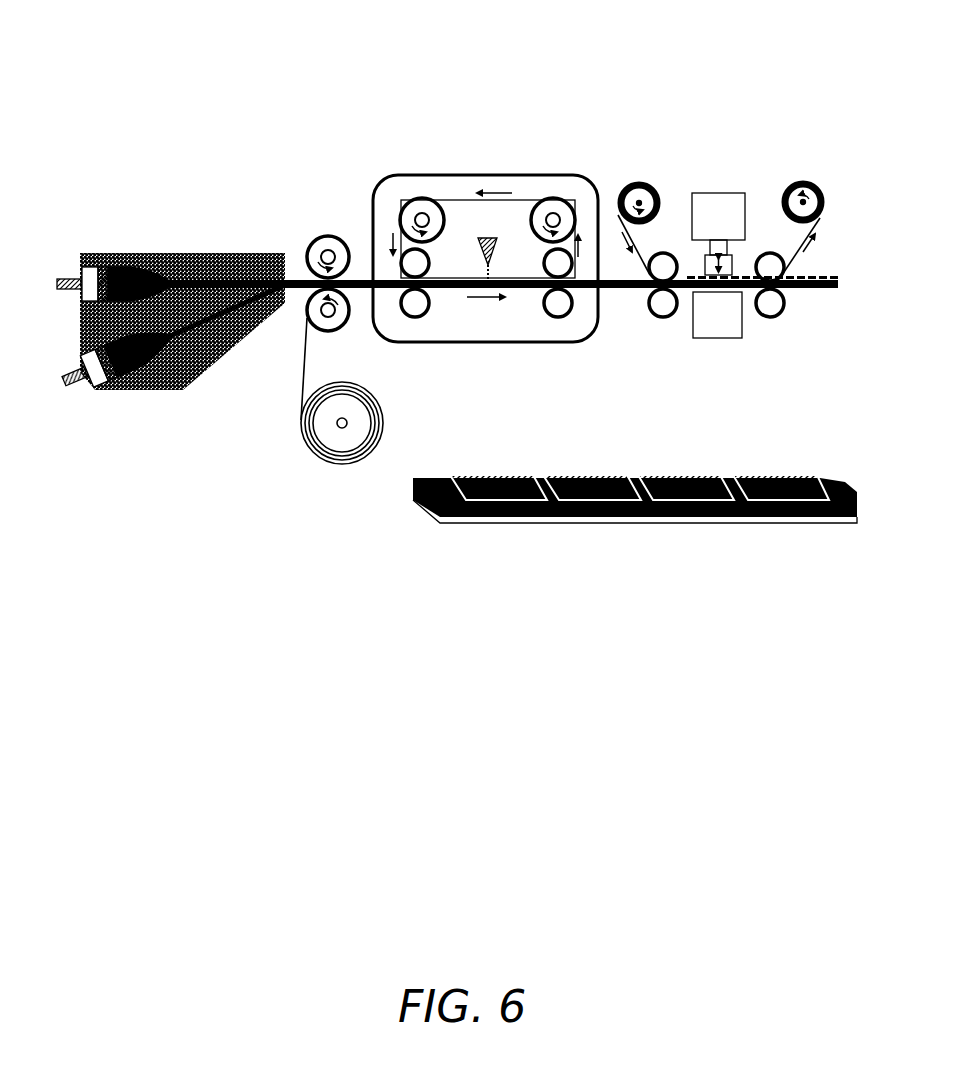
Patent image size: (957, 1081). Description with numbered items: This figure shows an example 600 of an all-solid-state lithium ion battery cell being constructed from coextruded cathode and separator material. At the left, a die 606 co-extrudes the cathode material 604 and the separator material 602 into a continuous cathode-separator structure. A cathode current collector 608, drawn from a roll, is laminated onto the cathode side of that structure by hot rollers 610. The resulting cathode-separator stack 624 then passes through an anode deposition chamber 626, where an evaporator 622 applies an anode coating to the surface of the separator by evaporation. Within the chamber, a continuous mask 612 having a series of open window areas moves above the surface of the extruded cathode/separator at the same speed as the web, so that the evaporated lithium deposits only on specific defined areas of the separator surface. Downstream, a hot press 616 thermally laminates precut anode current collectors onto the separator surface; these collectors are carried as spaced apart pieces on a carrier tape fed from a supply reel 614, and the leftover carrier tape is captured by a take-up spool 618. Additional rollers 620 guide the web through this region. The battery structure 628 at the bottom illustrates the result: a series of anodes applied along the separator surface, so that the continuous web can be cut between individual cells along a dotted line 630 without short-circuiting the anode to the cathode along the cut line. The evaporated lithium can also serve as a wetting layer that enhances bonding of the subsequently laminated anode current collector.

The all-solid-state lithium ion battery cell example 600 is at (523, 77).
The separator material 602 is at (128, 266).
The cathode material 604 is at (137, 379).
The die 606 is at (178, 388).
The cathode current collector 608 is at (298, 386).
The hot rollers 610 is at (330, 238).
The continuous mask 612 is at (463, 200).
The supply reel 614 is at (645, 183).
The hot press 616 is at (728, 193).
The take-up spool 618 is at (822, 192).
The rollers 620 is at (773, 318).
The evaporator 622 is at (483, 238).
The cathode-separator stack 624 is at (360, 290).
The anode deposition chamber 626 is at (522, 343).
The battery structure 628 is at (635, 462).
The dotted line 630 is at (720, 475).